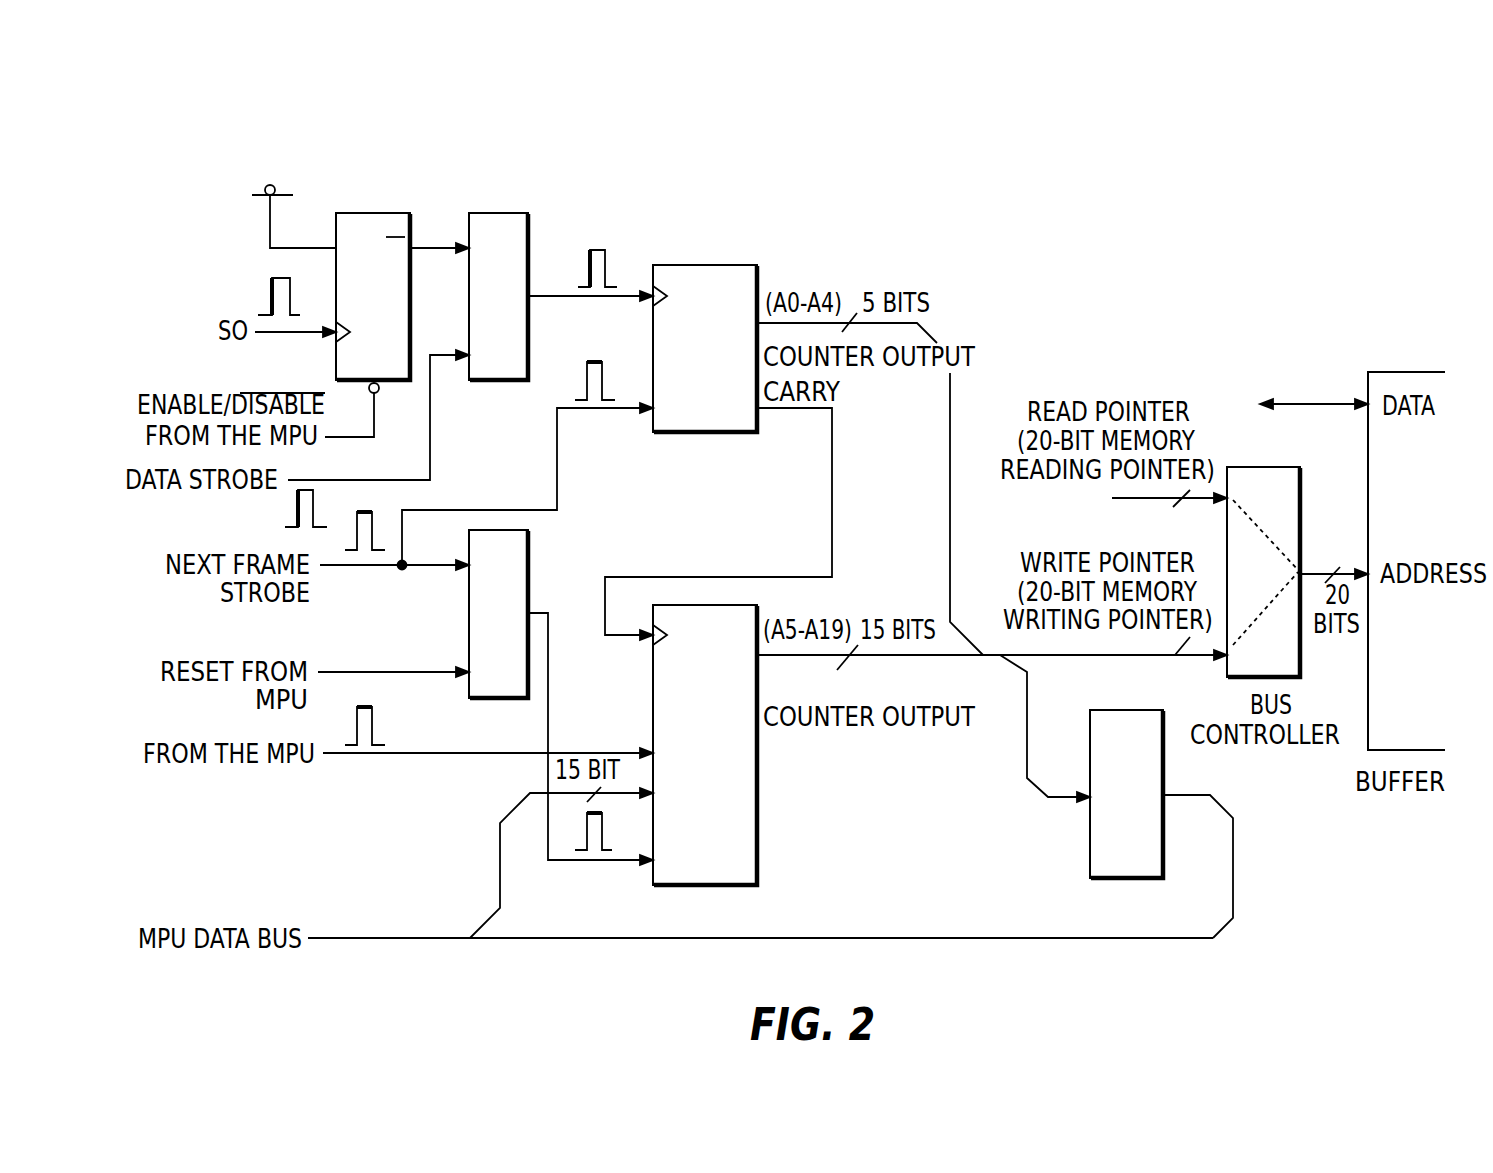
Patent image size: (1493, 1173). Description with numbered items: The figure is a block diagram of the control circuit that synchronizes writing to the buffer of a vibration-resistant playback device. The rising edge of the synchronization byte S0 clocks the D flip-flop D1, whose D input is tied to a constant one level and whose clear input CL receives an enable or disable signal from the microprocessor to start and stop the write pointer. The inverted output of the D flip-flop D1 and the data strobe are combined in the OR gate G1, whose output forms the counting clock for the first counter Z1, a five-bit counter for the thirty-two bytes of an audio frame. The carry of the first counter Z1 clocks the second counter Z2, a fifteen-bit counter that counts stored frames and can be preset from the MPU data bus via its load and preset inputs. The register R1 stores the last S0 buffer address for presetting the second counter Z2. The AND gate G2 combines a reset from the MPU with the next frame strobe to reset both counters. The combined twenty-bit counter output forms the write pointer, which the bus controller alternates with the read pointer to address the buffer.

The D flip-flop D1 is at (370, 213).
The OR gate G1 is at (527, 213).
The first counter Z1 is at (760, 273).
The AND gate G2 is at (530, 553).
The second counter Z2 is at (757, 823).
The register R1 is at (1120, 710).